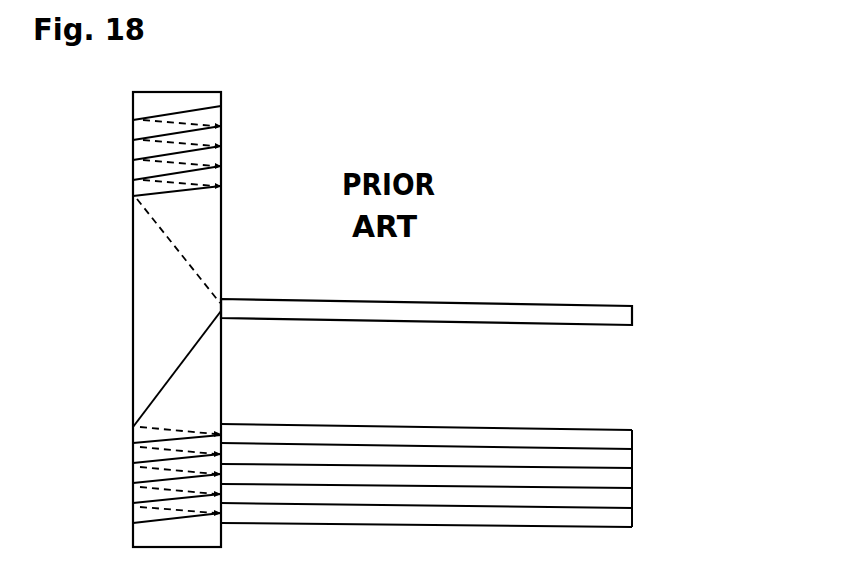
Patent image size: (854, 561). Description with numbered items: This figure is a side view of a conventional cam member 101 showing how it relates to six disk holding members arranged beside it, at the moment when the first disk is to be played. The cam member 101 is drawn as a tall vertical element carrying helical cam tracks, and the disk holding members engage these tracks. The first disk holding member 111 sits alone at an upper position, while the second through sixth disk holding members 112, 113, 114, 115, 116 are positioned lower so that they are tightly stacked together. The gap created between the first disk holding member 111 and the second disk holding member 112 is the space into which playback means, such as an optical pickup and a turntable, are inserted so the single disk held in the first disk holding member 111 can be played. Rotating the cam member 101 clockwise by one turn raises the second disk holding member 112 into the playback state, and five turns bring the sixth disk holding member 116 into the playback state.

The cam member 101 is at (287, 72).
The first disk holding member 111 is at (475, 291).
The second disk holding member 112 is at (477, 406).
The third disk holding member 113 is at (477, 437).
The fourth disk holding member 114 is at (477, 470).
The fifth disk holding member 115 is at (632, 499).
The sixth disk holding member 116 is at (477, 533).